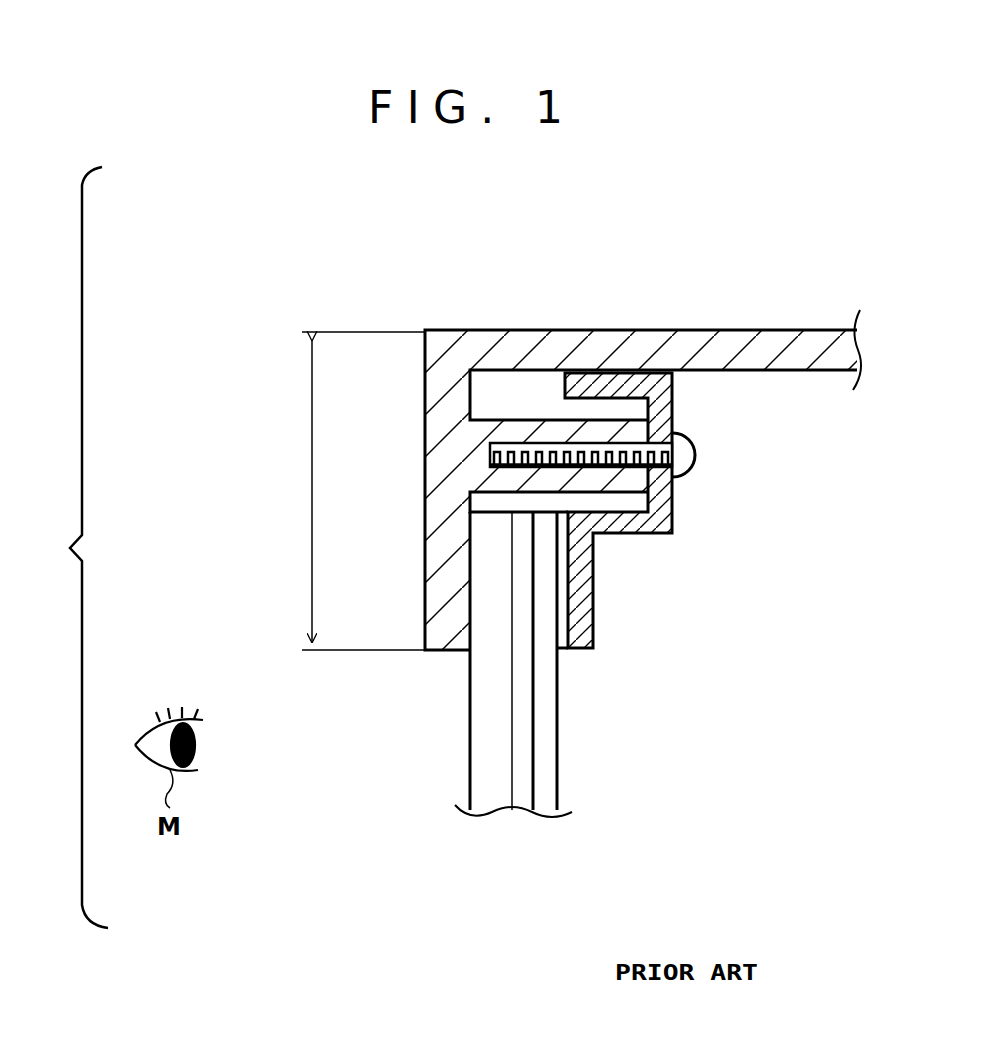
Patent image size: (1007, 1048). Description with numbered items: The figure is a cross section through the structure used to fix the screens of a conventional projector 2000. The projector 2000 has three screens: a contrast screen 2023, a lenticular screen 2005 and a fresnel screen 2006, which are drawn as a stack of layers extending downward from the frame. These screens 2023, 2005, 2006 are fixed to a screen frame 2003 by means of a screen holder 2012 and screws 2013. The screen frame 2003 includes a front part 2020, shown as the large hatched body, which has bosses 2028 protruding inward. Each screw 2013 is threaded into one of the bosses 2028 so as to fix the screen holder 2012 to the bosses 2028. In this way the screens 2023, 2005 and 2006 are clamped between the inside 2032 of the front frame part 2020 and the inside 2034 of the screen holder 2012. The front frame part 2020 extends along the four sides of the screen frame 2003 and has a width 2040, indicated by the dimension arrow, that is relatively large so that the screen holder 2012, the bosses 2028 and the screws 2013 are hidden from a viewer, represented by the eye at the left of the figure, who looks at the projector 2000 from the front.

The projector 2000 is at (749, 282).
The screen frame 2003 is at (602, 345).
The boss 2028 is at (478, 432).
The front part 2020 is at (442, 468).
The screen holder 2012 is at (594, 614).
The inside of the screen holder 2034 is at (572, 572).
The screw 2013 is at (696, 453).
The contrast screen 2023 is at (490, 768).
The fresnel screen 2006 is at (545, 742).
The lenticular screen 2005 is at (523, 790).
The inside of the front frame part 2032 is at (471, 622).
The width 2040 is at (312, 487).